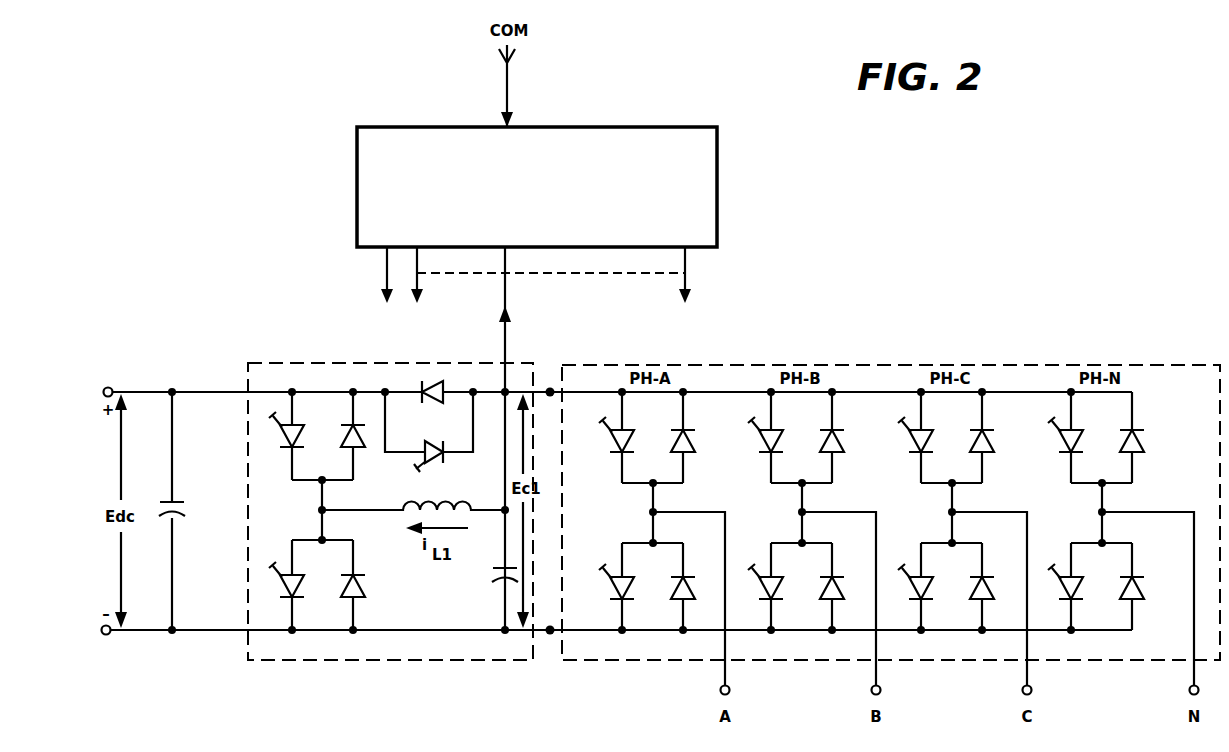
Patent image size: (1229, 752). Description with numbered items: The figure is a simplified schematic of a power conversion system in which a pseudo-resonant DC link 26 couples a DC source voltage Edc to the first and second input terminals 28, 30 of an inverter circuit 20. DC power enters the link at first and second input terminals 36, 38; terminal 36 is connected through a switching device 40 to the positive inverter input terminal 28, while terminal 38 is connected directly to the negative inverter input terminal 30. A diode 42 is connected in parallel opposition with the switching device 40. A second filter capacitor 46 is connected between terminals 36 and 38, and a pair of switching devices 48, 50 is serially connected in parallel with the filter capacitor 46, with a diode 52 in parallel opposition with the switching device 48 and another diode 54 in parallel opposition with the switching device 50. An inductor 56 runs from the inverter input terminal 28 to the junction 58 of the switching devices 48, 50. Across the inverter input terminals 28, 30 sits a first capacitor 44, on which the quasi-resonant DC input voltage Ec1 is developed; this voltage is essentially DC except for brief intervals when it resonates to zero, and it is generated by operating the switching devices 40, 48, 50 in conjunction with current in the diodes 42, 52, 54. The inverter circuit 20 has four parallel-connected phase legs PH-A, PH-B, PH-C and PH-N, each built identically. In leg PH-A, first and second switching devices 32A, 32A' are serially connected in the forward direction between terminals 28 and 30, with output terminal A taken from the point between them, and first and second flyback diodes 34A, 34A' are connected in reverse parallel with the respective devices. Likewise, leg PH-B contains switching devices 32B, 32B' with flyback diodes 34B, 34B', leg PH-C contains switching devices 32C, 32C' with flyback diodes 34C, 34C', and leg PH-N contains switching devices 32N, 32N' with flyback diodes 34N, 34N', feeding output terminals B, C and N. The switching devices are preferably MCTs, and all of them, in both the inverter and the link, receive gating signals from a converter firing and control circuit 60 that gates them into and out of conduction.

The inverter circuit 20 is at (1028, 364).
The pseudo-resonant DC link 26 is at (352, 663).
The first input terminal 28 is at (549, 388).
The second input terminal 30 is at (549, 636).
The first switching device 32A is at (602, 439).
The first flyback diode 34A is at (707, 441).
The second switching device 32A' is at (604, 575).
The second flyback diode 34A' is at (692, 574).
The first switching device 32B is at (741, 437).
The first flyback diode 34B is at (857, 441).
The second switching device 32B' is at (757, 575).
The second flyback diode 34B' is at (842, 574).
The first switching device 32C is at (892, 437).
The first flyback diode 34C is at (1008, 440).
The second switching device 32C' is at (913, 573).
The second flyback diode 34C' is at (992, 573).
The first switching device 32N is at (1042, 437).
The first flyback diode 34N is at (1163, 440).
The second switching device 32N' is at (1066, 573).
The second flyback diode 34N' is at (1149, 573).
The first input terminal 36 is at (105, 386).
The second input terminal 38 is at (105, 638).
The switching device 40 is at (430, 446).
The diode 42 is at (435, 388).
The first capacitor 44 is at (490, 578).
The second filter capacitor 46 is at (167, 498).
The switching device 48 is at (286, 455).
The switching device 50 is at (287, 572).
The diode 52 is at (362, 448).
The diode 54 is at (366, 585).
The inductor 56 is at (462, 502).
The junction 58 is at (326, 512).
The converter firing and control circuit 60 is at (641, 127).